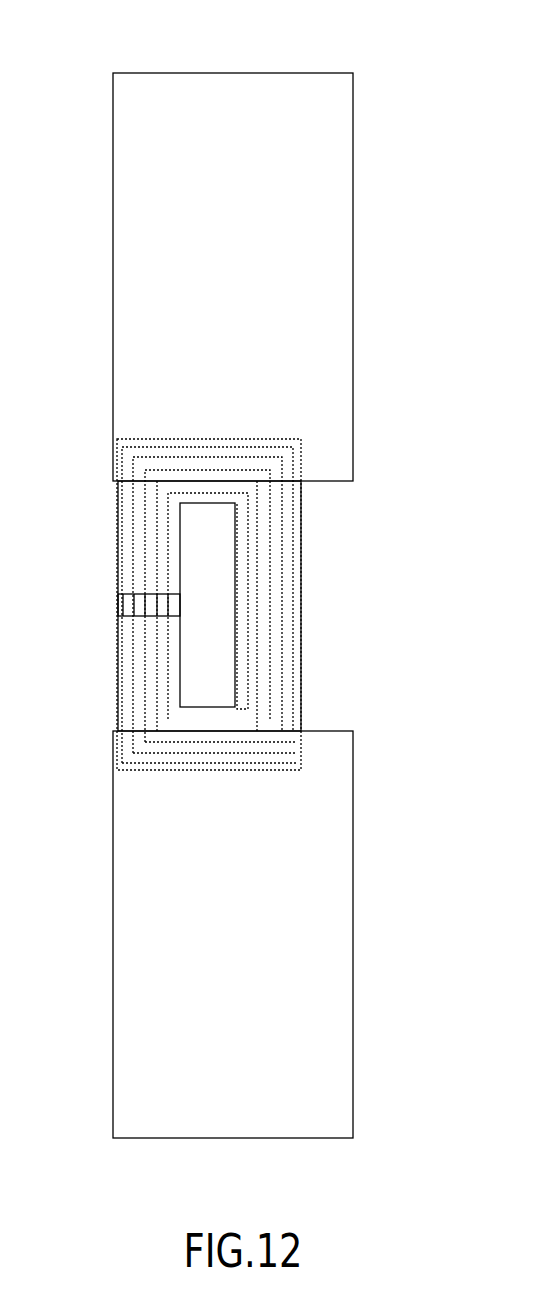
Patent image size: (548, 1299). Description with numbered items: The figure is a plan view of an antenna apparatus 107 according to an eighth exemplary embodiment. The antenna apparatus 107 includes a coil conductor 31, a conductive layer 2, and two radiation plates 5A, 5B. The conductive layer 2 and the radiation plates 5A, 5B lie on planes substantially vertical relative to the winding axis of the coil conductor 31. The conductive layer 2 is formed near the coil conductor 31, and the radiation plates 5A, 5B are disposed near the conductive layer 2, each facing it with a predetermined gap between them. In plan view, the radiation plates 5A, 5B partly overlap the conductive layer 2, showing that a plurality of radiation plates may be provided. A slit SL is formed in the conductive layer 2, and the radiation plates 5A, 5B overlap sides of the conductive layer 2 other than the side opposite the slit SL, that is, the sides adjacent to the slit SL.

The antenna apparatus 107 is at (490, 40).
The radiation plate 5A is at (335, 263).
The radiation plate 5B is at (335, 972).
The conductive layer 2 is at (302, 656).
The coil conductor 31 is at (243, 601).
The slit SL is at (104, 606).